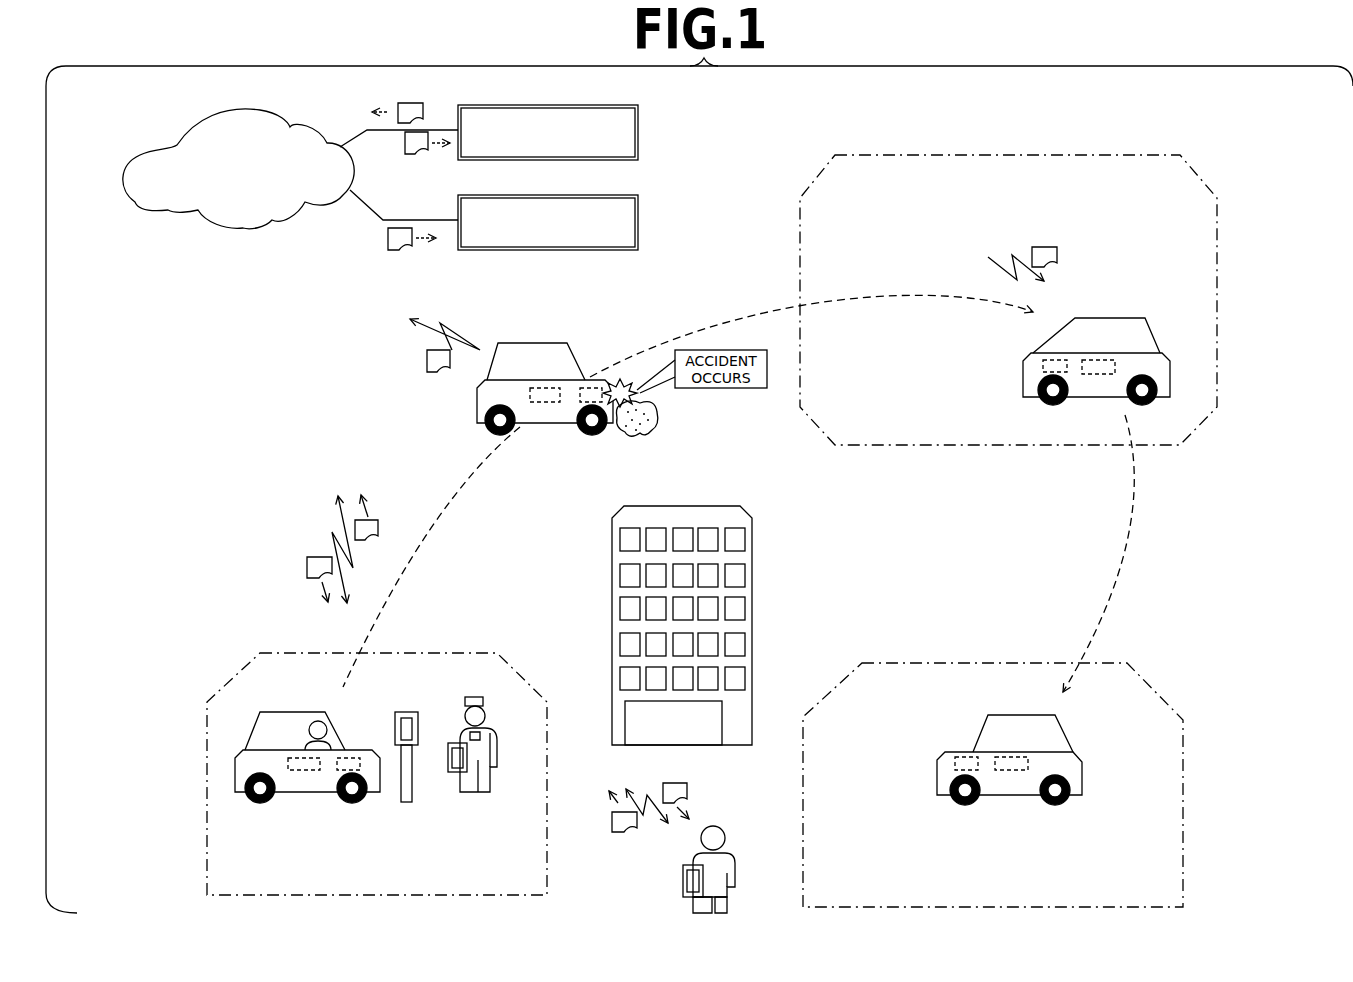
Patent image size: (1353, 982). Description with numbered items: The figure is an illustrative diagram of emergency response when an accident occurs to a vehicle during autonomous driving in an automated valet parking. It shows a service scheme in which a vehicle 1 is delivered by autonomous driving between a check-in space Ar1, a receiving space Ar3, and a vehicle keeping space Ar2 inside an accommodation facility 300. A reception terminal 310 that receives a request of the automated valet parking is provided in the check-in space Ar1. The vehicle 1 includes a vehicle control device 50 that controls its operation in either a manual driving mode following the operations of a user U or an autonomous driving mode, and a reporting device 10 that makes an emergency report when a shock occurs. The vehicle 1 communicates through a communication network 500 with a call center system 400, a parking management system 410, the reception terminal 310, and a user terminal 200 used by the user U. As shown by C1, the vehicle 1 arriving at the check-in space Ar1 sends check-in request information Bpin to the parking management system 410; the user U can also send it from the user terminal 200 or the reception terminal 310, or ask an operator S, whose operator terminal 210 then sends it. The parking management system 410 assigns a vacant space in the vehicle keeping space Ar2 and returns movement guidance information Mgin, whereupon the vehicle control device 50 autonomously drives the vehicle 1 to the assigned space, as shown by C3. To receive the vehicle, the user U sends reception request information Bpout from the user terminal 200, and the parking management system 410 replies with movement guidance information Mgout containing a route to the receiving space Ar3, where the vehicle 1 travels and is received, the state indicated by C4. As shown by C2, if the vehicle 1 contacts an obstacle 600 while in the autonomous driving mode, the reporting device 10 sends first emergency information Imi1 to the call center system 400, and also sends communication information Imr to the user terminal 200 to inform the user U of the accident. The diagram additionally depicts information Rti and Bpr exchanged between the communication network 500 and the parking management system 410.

The vehicle 1 is at (548, 343).
The reporting device 10 is at (575, 392).
The vehicle control device 50 is at (543, 403).
The user terminal 200 is at (680, 885).
The operator terminal 210 is at (447, 758).
The accommodation facility 300 is at (680, 506).
The reception terminal 310 is at (407, 712).
The call center system 400 is at (640, 220).
The parking management system 410 is at (640, 130).
The communication network 500 is at (177, 145).
The obstacle 600 is at (657, 423).
The user U is at (317, 722).
The operator S is at (487, 724).
The check-in space Ar1 is at (207, 737).
The vehicle keeping space Ar2 is at (1217, 263).
The receiving space Ar3 is at (1183, 772).
The check-in state C1 is at (438, 622).
The accident state C2 is at (608, 323).
The parked state C3 is at (1116, 252).
The state C4 is at (1029, 630).
The route information Rti is at (411, 113).
The parking reservation request Bpr is at (410, 143).
The first emergency information Imi1 is at (415, 300).
The movement guidance information Mgout is at (1029, 254).
The check-in request information Bpin is at (376, 549).
The movement guidance information Mgin is at (298, 579).
The communication information Imr is at (677, 791).
The reception request information Bpout is at (613, 811).